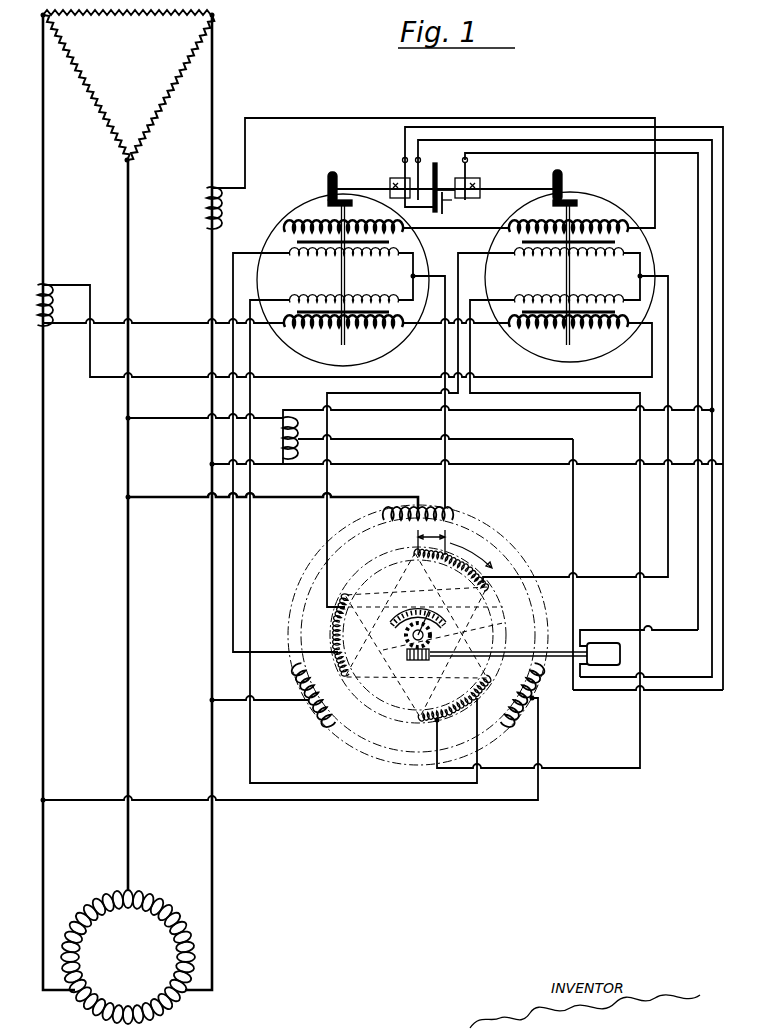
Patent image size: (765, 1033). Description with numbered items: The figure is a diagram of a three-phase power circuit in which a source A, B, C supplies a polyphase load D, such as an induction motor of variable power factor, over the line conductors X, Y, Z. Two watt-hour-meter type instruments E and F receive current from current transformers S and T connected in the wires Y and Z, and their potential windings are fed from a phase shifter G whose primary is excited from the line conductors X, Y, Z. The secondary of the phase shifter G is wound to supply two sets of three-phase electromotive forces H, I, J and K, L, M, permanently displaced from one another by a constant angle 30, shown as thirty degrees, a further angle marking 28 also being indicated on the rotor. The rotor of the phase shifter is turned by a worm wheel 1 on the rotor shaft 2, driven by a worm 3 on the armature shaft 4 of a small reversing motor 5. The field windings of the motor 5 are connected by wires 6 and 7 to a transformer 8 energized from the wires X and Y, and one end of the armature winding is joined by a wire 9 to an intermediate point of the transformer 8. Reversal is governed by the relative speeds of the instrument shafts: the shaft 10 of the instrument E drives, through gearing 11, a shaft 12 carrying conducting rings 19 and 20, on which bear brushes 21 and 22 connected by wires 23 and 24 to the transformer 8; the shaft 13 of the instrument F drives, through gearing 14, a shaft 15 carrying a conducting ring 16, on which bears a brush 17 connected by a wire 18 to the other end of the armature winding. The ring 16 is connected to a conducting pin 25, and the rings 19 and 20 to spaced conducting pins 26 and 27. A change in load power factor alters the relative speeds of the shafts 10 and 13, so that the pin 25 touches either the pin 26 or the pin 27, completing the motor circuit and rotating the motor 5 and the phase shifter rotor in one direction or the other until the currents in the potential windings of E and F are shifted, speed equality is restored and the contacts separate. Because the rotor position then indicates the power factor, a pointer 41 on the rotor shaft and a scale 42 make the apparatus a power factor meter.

The worm wheel 1 is at (404, 636).
The rotor shaft 2 is at (455, 637).
The worm 3 is at (405, 670).
The armature shaft 4 is at (562, 662).
The motor 5 is at (603, 654).
The wire 6 is at (690, 677).
The wire 7 is at (698, 691).
The transformer 8 is at (277, 437).
The wire 9 is at (577, 606).
The shaft 10 is at (345, 274).
The gearing 11 is at (328, 204).
The shaft 12 is at (343, 182).
The shaft 13 is at (575, 274).
The gearing 14 is at (555, 204).
The shaft 15 is at (524, 189).
The conducting ring 16 is at (461, 180).
The brush 17 is at (469, 164).
The wire 18 is at (698, 243).
The conducting ring 19 is at (391, 180).
The conducting ring 20 is at (438, 170).
The brush 21 is at (402, 159).
The brush 22 is at (419, 160).
The wire 23 is at (680, 127).
The wire 24 is at (718, 140).
The conducting pin 25 is at (442, 214).
The conducting pin 26 is at (452, 200).
The conducting pin 27 is at (445, 209).
The angle 28 is at (431, 540).
The phase displacement angle 30 is at (471, 555).
The pointer 41 is at (452, 634).
The scale 42 is at (435, 611).
The three-phase current source A is at (167, 88).
The three-phase current source B is at (127, 27).
The three-phase current source C is at (87, 86).
The polyphase load winding D is at (128, 957).
The instrument E is at (284, 205).
The instrument F is at (608, 206).
The phase shifter G is at (525, 718).
The current transformer S is at (222, 208).
The current transformer T is at (55, 305).
The line conductor X is at (116, 525).
The line conductor Y is at (198, 502).
The line conductor Z is at (48, 502).
The secondary electromotive force H is at (442, 567).
The secondary electromotive force I is at (347, 649).
The secondary electromotive force J is at (470, 684).
The secondary electromotive force K is at (471, 586).
The secondary electromotive force L is at (351, 608).
The secondary electromotive force M is at (445, 702).